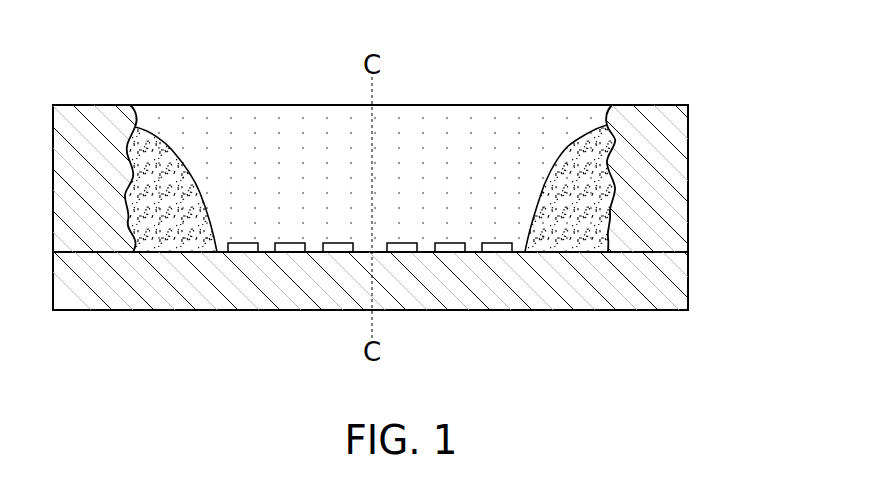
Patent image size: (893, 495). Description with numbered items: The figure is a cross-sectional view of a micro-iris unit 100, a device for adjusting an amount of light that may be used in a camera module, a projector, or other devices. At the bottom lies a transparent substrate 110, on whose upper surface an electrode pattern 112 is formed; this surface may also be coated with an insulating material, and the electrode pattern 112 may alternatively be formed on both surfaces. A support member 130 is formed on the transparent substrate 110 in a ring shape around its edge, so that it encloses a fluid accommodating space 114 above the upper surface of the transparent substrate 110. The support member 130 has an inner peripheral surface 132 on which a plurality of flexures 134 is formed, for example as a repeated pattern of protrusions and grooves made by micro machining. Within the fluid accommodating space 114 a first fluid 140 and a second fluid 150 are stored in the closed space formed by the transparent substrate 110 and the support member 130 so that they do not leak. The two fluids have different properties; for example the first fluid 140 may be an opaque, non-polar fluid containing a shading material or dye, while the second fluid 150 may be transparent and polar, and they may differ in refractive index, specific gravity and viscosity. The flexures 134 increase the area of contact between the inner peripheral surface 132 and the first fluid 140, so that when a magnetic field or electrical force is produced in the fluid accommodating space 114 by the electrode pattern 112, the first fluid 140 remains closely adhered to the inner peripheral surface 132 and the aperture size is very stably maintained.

The micro-iris unit 100 is at (534, 72).
The transparent substrate 110 is at (675, 278).
The electrode pattern 112 is at (403, 252).
The fluid accommodating space 114 is at (464, 166).
The support member 130 is at (675, 173).
The inner peripheral surface 132 is at (150, 165).
The flexures 134 is at (128, 210).
The first fluid 140 is at (158, 145).
The second fluid 150 is at (282, 122).